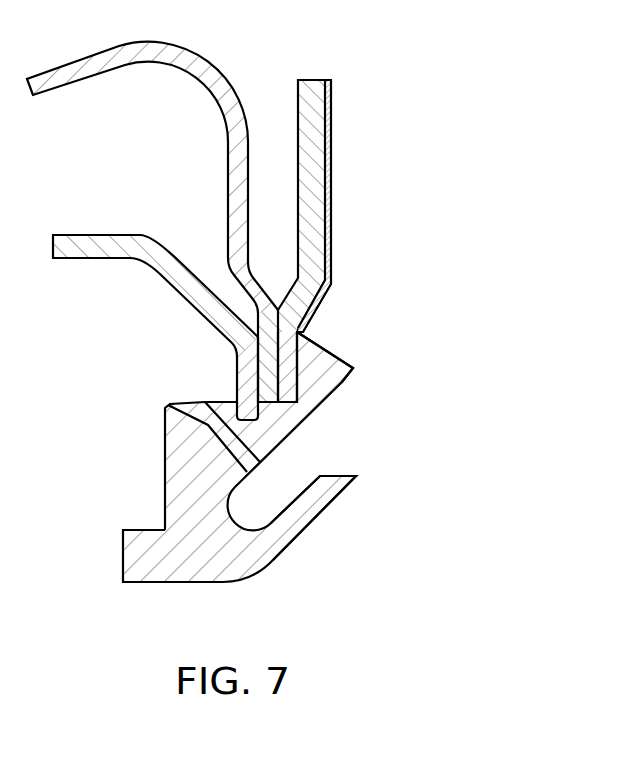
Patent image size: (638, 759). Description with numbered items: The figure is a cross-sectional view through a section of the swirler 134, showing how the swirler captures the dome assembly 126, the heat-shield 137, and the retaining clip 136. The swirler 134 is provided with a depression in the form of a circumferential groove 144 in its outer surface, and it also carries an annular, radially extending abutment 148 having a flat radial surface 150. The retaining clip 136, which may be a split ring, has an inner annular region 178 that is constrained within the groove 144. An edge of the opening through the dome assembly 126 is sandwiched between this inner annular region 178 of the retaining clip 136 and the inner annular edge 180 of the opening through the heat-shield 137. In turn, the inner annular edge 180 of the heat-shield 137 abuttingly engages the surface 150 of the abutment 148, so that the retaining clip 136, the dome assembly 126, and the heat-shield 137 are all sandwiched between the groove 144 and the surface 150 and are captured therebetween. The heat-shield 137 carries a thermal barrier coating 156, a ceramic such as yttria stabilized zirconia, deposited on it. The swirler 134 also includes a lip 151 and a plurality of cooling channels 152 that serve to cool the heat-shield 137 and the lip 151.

The dome assembly 126 is at (190, 74).
The retaining clip 136 is at (83, 252).
The heat-shield 137 is at (314, 88).
The thermal barrier coating 156 is at (328, 197).
The abutment 148 is at (320, 353).
The surface 150 is at (300, 370).
The inner annular edge 180 is at (288, 389).
The inner annular region 178 is at (247, 378).
The groove 144 is at (258, 421).
The cooling channel 152 is at (208, 424).
The lip 151 is at (315, 503).
The swirler 134 is at (192, 568).